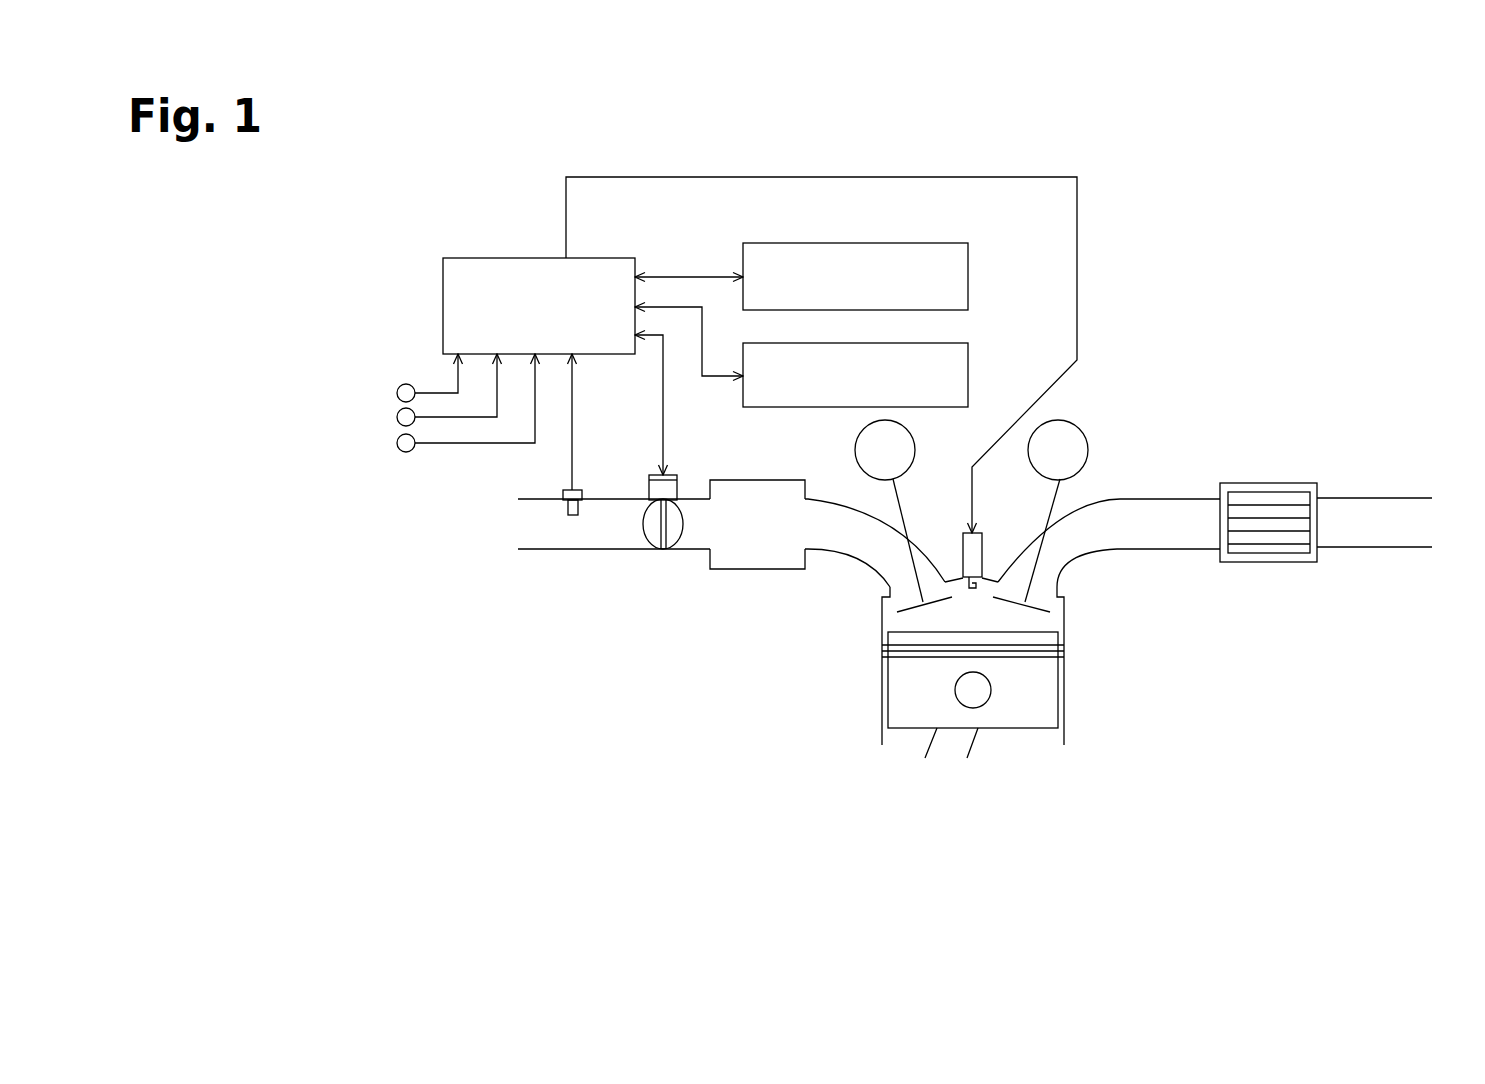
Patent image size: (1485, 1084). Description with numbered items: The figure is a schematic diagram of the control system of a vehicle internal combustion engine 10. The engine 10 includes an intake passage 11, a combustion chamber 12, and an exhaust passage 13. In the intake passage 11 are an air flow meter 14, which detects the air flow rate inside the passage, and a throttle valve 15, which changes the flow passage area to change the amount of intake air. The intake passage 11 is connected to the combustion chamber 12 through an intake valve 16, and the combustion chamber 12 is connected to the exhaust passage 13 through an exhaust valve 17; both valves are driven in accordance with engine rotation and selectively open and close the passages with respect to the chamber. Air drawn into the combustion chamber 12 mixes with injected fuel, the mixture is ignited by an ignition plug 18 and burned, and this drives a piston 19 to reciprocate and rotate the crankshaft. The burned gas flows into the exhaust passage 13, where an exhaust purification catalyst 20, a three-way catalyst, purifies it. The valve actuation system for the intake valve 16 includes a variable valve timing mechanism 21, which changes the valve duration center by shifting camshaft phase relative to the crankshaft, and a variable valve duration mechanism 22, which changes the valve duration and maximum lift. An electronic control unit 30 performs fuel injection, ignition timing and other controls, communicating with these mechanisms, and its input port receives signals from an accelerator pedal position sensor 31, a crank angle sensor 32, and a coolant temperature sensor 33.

The engine 10 is at (843, 610).
The intake passage 11 is at (597, 541).
The combustion chamber 12 is at (990, 622).
The exhaust passage 13 is at (1080, 553).
The air flow meter 14 is at (563, 492).
The throttle valve 15 is at (657, 542).
The intake valve 16 is at (918, 563).
The exhaust valve 17 is at (1022, 558).
The ignition plug 18 is at (985, 547).
The piston 19 is at (1032, 717).
The exhaust purification catalyst 20 is at (1270, 492).
The variable valve timing mechanism 21 is at (970, 276).
The variable valve duration mechanism 22 is at (970, 374).
The electronic control unit 30 is at (443, 306).
The accelerator pedal position sensor 31 is at (397, 394).
The crank angle sensor 32 is at (397, 418).
The coolant temperature sensor 33 is at (397, 444).